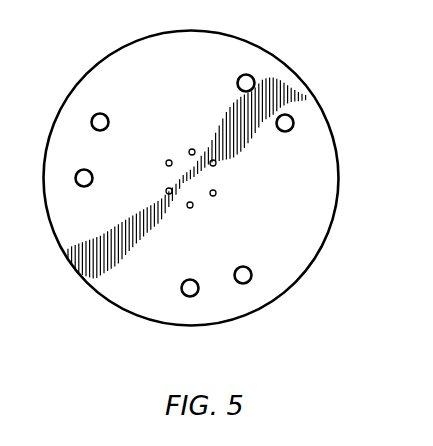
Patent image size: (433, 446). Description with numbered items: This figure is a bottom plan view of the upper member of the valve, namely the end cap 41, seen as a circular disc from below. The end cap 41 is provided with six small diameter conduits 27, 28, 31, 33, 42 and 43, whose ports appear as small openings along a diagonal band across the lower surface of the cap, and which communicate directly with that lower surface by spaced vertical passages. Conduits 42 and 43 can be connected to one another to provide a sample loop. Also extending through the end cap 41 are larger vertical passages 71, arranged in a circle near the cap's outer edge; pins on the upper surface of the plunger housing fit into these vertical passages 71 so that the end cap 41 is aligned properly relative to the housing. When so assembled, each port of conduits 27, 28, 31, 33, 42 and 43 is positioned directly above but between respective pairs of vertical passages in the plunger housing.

The end cap 41 is at (291, 245).
The vertical passages 71 is at (91, 122).
The conduit 33 is at (166, 191).
The conduit 31 is at (168, 160).
The conduit 42 is at (192, 149).
The conduit 28 is at (216, 164).
The conduit 27 is at (216, 194).
The conduit 43 is at (191, 208).